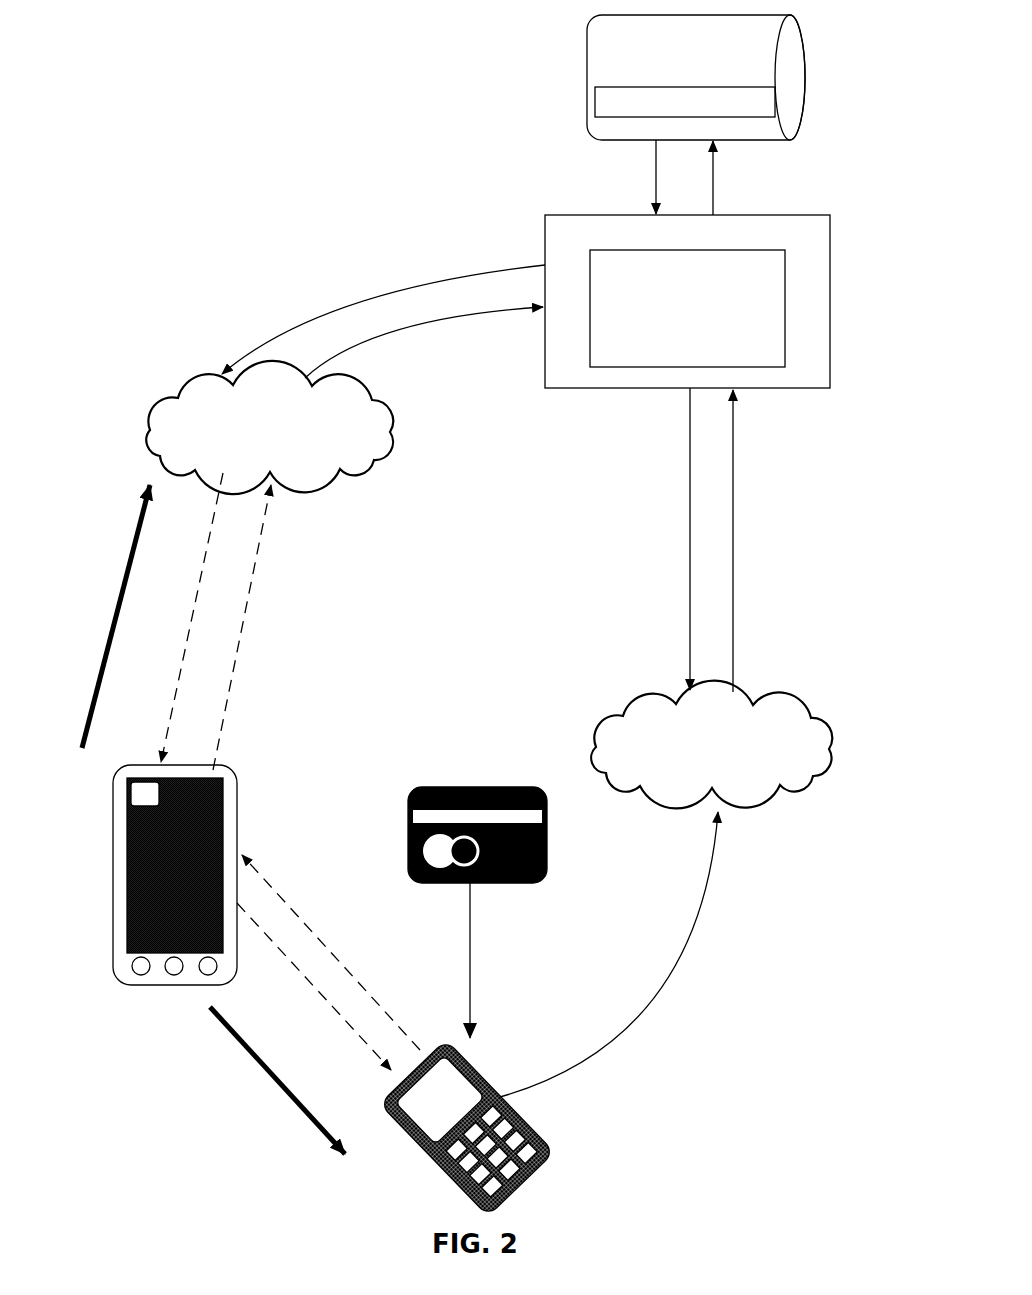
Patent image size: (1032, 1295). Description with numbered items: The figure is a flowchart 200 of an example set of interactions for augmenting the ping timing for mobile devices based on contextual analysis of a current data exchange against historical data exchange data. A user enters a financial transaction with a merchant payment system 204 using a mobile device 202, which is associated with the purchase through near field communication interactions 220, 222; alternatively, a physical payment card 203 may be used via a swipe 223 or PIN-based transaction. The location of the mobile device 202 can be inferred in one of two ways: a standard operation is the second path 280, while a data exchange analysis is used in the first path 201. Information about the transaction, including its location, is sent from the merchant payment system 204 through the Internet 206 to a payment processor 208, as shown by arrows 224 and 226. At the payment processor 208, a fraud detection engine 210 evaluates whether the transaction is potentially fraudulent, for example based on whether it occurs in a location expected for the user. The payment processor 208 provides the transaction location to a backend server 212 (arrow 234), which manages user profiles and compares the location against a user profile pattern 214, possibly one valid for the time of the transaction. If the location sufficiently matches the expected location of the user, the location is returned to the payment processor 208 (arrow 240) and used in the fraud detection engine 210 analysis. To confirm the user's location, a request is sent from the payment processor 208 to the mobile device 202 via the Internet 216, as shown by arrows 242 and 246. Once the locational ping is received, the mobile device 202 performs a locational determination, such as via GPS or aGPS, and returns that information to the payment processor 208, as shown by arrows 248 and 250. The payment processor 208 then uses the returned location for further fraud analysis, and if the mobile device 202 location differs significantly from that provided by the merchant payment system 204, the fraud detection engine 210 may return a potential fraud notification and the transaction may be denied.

The flowchart 200 is at (846, 1124).
The path 1 201 is at (228, 1030).
The mobile device 202 is at (156, 878).
The physical payment card 203 is at (456, 777).
The merchant payment system 204 is at (580, 1153).
The Internet 206 is at (698, 778).
The payment processor 208 is at (785, 244).
The fraud detection engine 210 is at (740, 353).
The backend server 212 is at (803, 80).
The user profile pattern 214 is at (594, 100).
The Internet 216 is at (255, 460).
The NFC interaction 220 is at (340, 1022).
The NFC interaction 222 is at (372, 1000).
The swipe 223 is at (470, 960).
The arrow 224 is at (698, 943).
The arrow 226 is at (737, 488).
The arrow 234 is at (716, 186).
The arrow 240 is at (654, 185).
The arrow 242 is at (330, 312).
The arrow 246 is at (178, 690).
The arrow 248 is at (225, 700).
The arrow 250 is at (370, 342).
The path 2 280 is at (128, 550).